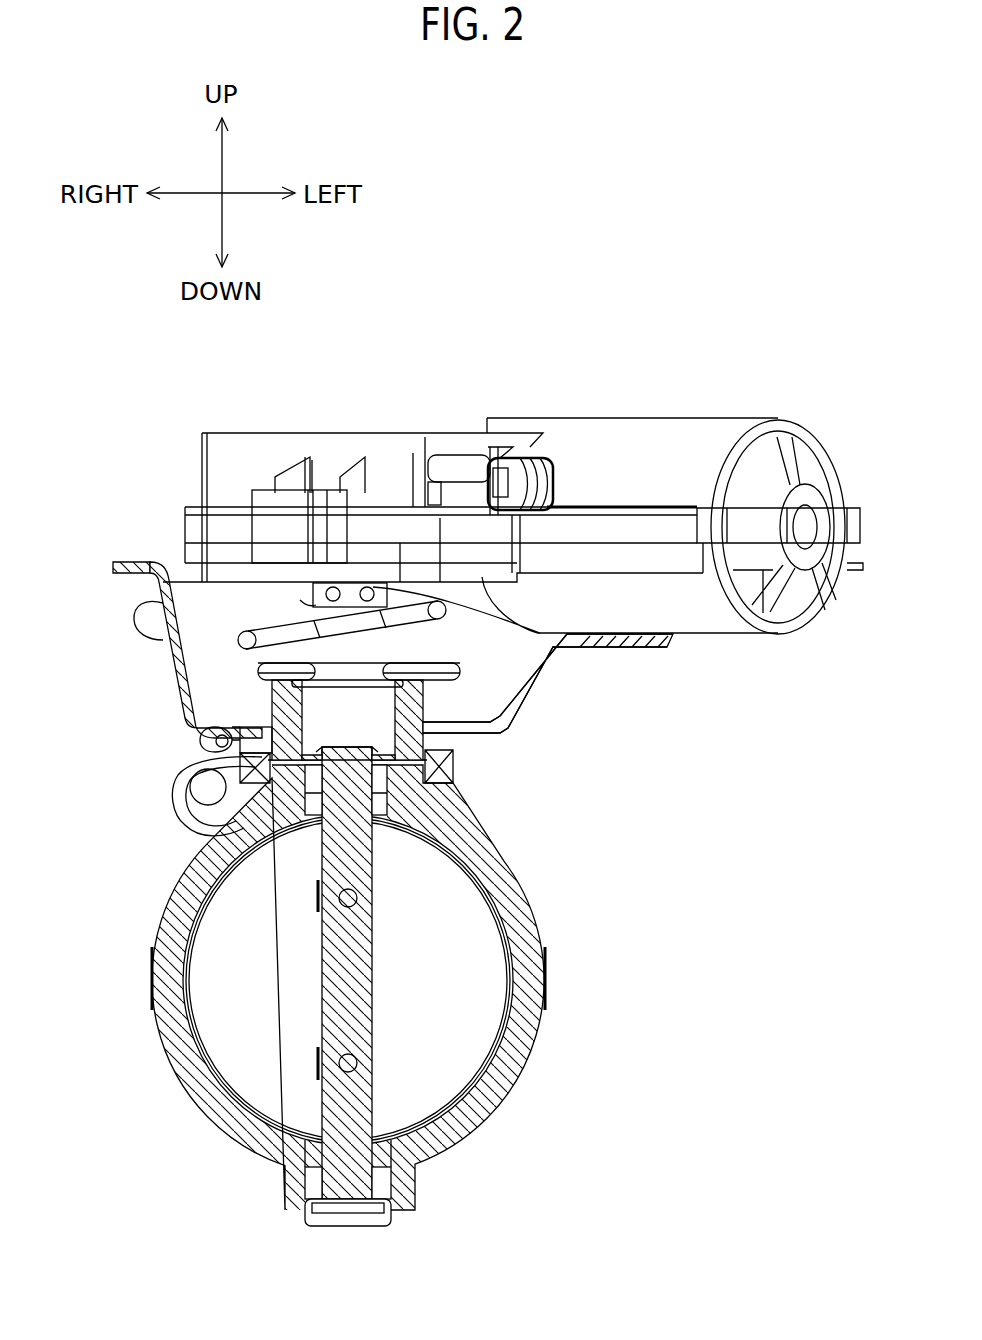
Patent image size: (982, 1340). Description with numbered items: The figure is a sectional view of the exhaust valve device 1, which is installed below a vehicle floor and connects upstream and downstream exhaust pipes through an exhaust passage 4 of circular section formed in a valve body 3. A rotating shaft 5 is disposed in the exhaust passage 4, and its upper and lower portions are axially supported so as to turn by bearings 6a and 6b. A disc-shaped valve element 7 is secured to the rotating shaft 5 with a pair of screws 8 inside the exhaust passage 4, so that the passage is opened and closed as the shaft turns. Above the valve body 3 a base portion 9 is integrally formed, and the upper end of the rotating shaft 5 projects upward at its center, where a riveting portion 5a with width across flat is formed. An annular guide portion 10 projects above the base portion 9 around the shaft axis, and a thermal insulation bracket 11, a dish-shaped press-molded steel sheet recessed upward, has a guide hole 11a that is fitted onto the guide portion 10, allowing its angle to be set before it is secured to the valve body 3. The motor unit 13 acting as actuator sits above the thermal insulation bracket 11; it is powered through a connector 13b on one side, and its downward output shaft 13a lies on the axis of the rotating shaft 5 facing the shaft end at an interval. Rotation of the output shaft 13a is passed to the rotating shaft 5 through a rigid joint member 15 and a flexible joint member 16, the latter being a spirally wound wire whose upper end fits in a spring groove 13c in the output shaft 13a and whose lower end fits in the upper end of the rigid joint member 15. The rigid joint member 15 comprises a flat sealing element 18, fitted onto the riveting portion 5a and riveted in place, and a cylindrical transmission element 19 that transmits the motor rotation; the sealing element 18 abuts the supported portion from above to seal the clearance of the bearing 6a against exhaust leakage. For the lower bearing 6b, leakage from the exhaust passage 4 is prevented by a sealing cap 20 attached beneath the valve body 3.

The exhaust valve device 1 is at (578, 360).
The valve body 3 is at (545, 990).
The exhaust passage 4 is at (467, 1043).
The rotating shaft 5 is at (325, 987).
The riveting portion 5a is at (352, 748).
The bearing 6a is at (308, 815).
The bearing 6b is at (305, 1180).
The valve element 7 is at (470, 916).
The screws 8 is at (357, 897).
The base portion 9 is at (240, 810).
The guide portion 10 is at (232, 728).
The thermal insulation bracket 11 is at (652, 637).
The guide hole 11a is at (200, 745).
The motor unit 13 is at (386, 430).
The output shaft 13a is at (300, 600).
The connector 13b is at (475, 452).
The spring groove 13c is at (360, 584).
The rigid joint member 15 is at (598, 706).
The flexible joint member 16 is at (425, 622).
The sealing element 18 is at (438, 742).
The transmission element 19 is at (420, 704).
The sealing cap 20 is at (350, 1226).